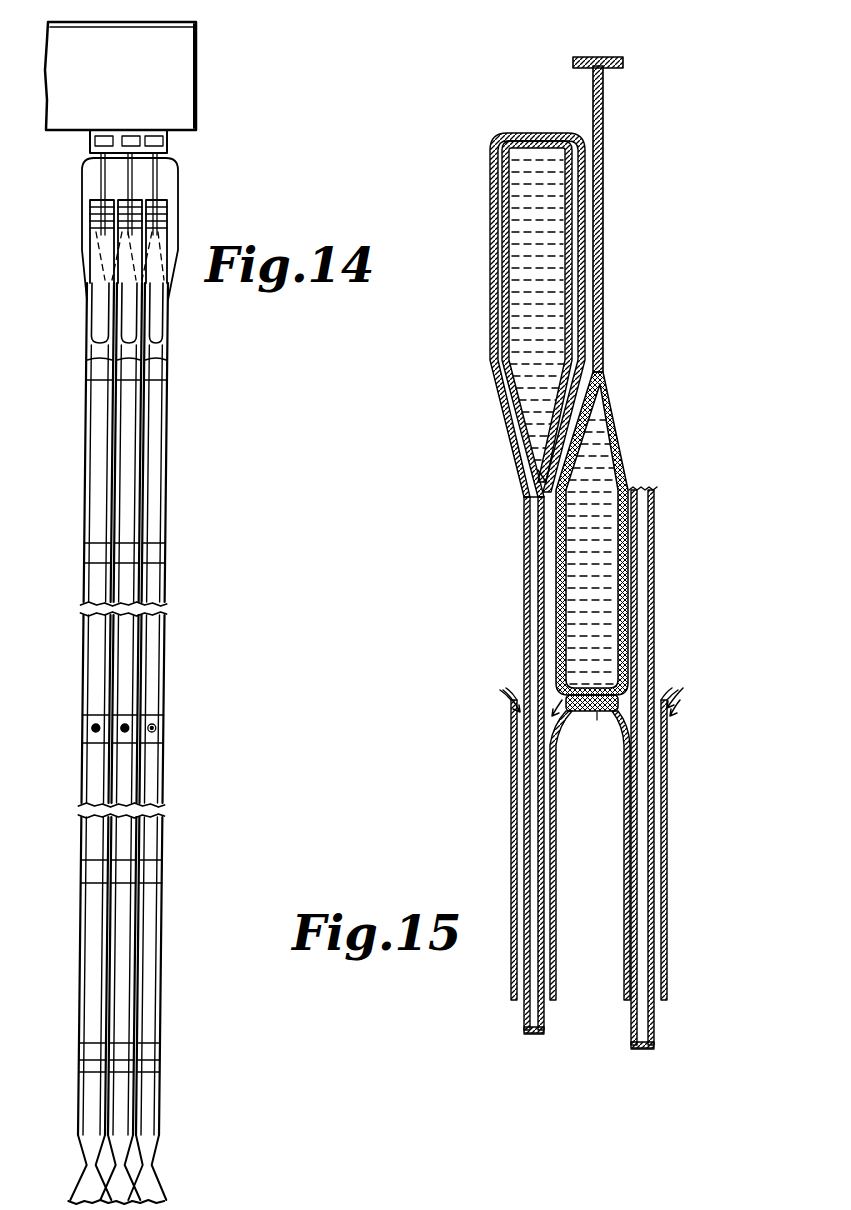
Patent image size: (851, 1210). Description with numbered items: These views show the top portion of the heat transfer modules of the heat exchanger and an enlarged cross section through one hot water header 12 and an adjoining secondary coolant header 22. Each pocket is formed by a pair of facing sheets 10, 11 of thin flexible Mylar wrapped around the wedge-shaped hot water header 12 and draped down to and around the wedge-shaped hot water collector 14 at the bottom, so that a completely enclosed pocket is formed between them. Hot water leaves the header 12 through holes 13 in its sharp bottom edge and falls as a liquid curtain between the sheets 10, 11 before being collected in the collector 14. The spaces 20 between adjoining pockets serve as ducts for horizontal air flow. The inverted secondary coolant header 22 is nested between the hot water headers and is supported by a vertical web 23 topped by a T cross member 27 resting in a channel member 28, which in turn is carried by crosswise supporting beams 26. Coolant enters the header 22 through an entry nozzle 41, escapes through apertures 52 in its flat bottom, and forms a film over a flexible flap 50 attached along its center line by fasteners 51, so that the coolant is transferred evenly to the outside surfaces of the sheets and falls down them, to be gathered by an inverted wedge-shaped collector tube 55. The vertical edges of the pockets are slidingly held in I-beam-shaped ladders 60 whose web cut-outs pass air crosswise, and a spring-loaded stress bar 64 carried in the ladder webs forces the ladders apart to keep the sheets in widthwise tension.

In FIG. 15, the sheet 10 is at (524, 537).
In FIG. 15, the sheet 11 is at (526, 500).
In FIG. 14, the hot water header 12 is at (88, 218).
In FIG. 15, the hot water header 12 is at (505, 358).
In FIG. 15, the holes 13 is at (534, 472).
In FIG. 14, the hot water collector 14 is at (136, 1186).
In FIG. 14, the spaces 20 is at (154, 498).
In FIG. 15, the spaces 20 is at (614, 988).
In FIG. 14, the secondary coolant header 22 is at (86, 256).
In FIG. 15, the secondary coolant header 22 is at (629, 580).
In FIG. 14, the web 23 is at (100, 192).
In FIG. 15, the web 23 is at (604, 232).
In FIG. 14, the supporting beams 26 is at (172, 91).
In FIG. 14, the T cross member 27 is at (132, 137).
In FIG. 15, the T cross member 27 is at (608, 78).
In FIG. 14, the channel member 28 is at (92, 146).
In FIG. 14, the entry nozzle 41 is at (128, 322).
In FIG. 15, the flap 50 is at (557, 740).
In FIG. 15, the fasteners 51 is at (604, 722).
In FIG. 15, the apertures 52 is at (582, 695).
In FIG. 14, the collector tube 55 is at (124, 1112).
In FIG. 14, the ladder 60 is at (142, 402).
In FIG. 15, the ladder 60 is at (512, 726).
In FIG. 14, the stress bar 64 is at (95, 728).